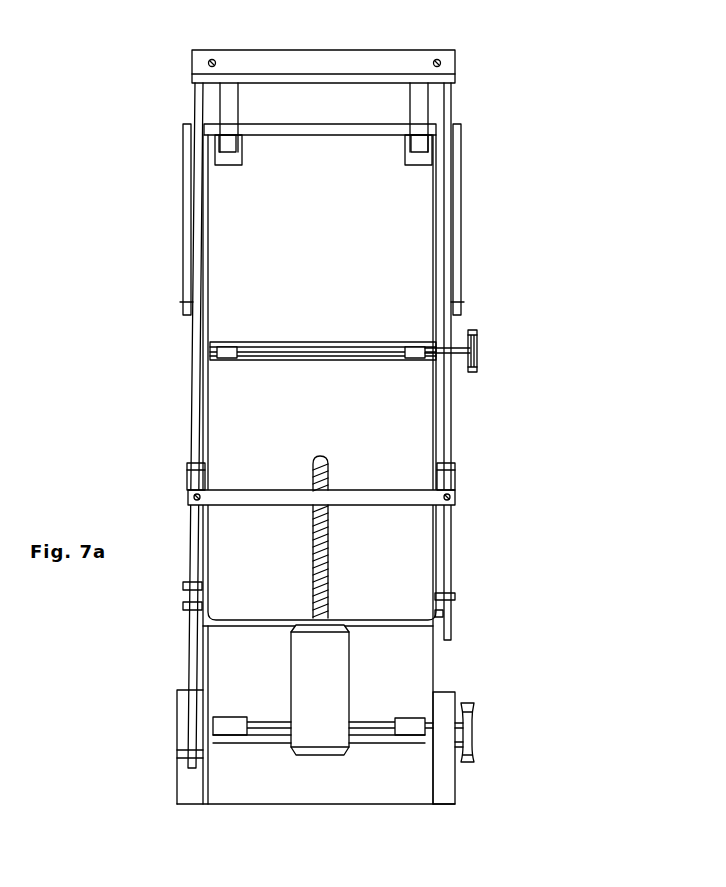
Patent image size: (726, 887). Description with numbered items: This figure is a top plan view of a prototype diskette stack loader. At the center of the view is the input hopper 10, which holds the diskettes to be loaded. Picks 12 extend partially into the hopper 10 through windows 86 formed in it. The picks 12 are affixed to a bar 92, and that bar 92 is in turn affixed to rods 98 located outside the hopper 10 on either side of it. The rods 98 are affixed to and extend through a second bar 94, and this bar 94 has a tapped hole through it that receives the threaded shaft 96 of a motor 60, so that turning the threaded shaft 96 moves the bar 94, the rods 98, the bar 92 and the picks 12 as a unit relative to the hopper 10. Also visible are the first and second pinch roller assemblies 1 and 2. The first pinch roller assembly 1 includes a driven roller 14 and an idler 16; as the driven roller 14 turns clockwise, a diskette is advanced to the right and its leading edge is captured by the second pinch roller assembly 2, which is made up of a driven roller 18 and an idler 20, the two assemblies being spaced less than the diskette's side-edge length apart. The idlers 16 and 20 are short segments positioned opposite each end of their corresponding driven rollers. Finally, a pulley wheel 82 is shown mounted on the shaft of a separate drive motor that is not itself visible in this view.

The first pinch roller assembly 1 is at (349, 360).
The second pinch roller assembly 2 is at (374, 748).
The input hopper 10 is at (386, 249).
The picks 12 is at (227, 108).
The driven roller 14 is at (328, 342).
The idler 16 is at (225, 358).
The driven roller 18 is at (263, 745).
The idler 20 is at (230, 717).
The motor 60 is at (327, 698).
The pulley wheel 82 is at (474, 752).
The windows 86 is at (223, 165).
The bar 92 is at (301, 49).
The bar 94 is at (278, 490).
The threaded shaft 96 is at (315, 520).
The rods 98 is at (186, 309).